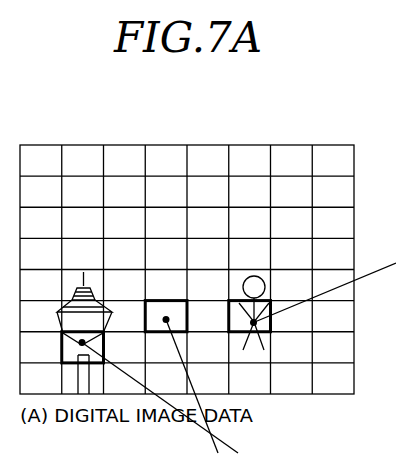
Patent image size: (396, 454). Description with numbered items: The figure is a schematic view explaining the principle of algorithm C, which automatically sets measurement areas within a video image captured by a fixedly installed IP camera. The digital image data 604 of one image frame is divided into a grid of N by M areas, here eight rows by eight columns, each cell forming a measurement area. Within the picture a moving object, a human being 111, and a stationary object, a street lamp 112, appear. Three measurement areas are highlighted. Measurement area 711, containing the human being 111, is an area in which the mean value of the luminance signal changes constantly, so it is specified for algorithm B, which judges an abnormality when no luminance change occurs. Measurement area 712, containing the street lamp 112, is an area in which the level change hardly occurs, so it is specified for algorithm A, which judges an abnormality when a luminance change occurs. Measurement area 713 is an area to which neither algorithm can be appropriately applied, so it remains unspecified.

The digital image data grid 604 is at (56, 144).
The person object 111 is at (254, 276).
The lighthouse object 112 is at (93, 298).
The measurement area 711 is at (257, 324).
The measurement area 712 is at (62, 333).
The measurement area 713 is at (165, 299).